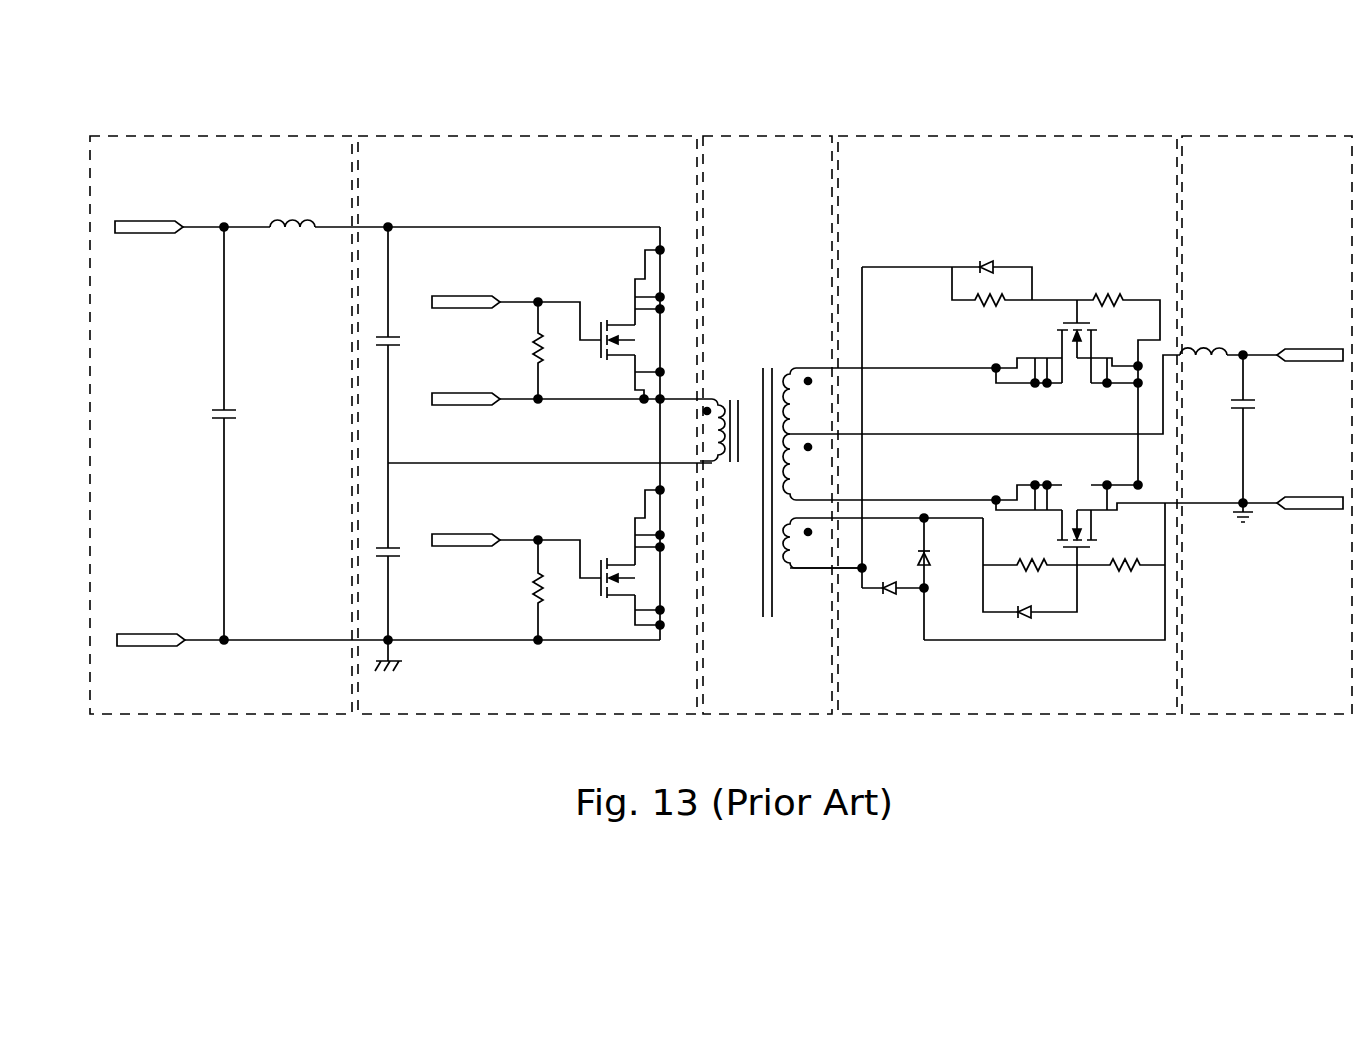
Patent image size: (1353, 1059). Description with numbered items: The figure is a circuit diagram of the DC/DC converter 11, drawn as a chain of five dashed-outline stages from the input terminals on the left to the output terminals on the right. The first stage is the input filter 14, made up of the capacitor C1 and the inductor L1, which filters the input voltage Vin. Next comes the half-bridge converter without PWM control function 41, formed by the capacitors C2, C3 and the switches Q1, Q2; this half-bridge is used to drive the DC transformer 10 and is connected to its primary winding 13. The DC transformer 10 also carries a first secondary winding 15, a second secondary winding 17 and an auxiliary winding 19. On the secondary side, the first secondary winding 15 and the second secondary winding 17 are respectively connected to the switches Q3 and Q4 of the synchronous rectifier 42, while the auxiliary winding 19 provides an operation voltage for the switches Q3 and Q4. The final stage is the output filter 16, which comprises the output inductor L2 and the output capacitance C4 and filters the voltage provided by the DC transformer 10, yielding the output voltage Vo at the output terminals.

The DC/DC converter 11 is at (1064, 100).
The input filter 14 is at (327, 697).
The half-bridge converter without PWM control function 41 is at (660, 697).
The DC transformer 10 is at (805, 697).
The primary winding 13 is at (699, 450).
The first secondary winding 15 is at (822, 401).
The second secondary winding 17 is at (822, 467).
The auxiliary winding 19 is at (822, 543).
The synchronous rectifier 42 is at (911, 697).
The output filter 16 is at (1316, 697).
The inductor L1 is at (292, 211).
The capacitor C1 is at (244, 433).
The capacitor C2 is at (404, 345).
The capacitor C3 is at (402, 551).
The switch Q1 is at (648, 322).
The switch Q2 is at (648, 557).
The switch Q3 is at (1002, 355).
The switch Q4 is at (1069, 510).
The output inductor L2 is at (1203, 339).
The output capacitance C4 is at (1229, 429).